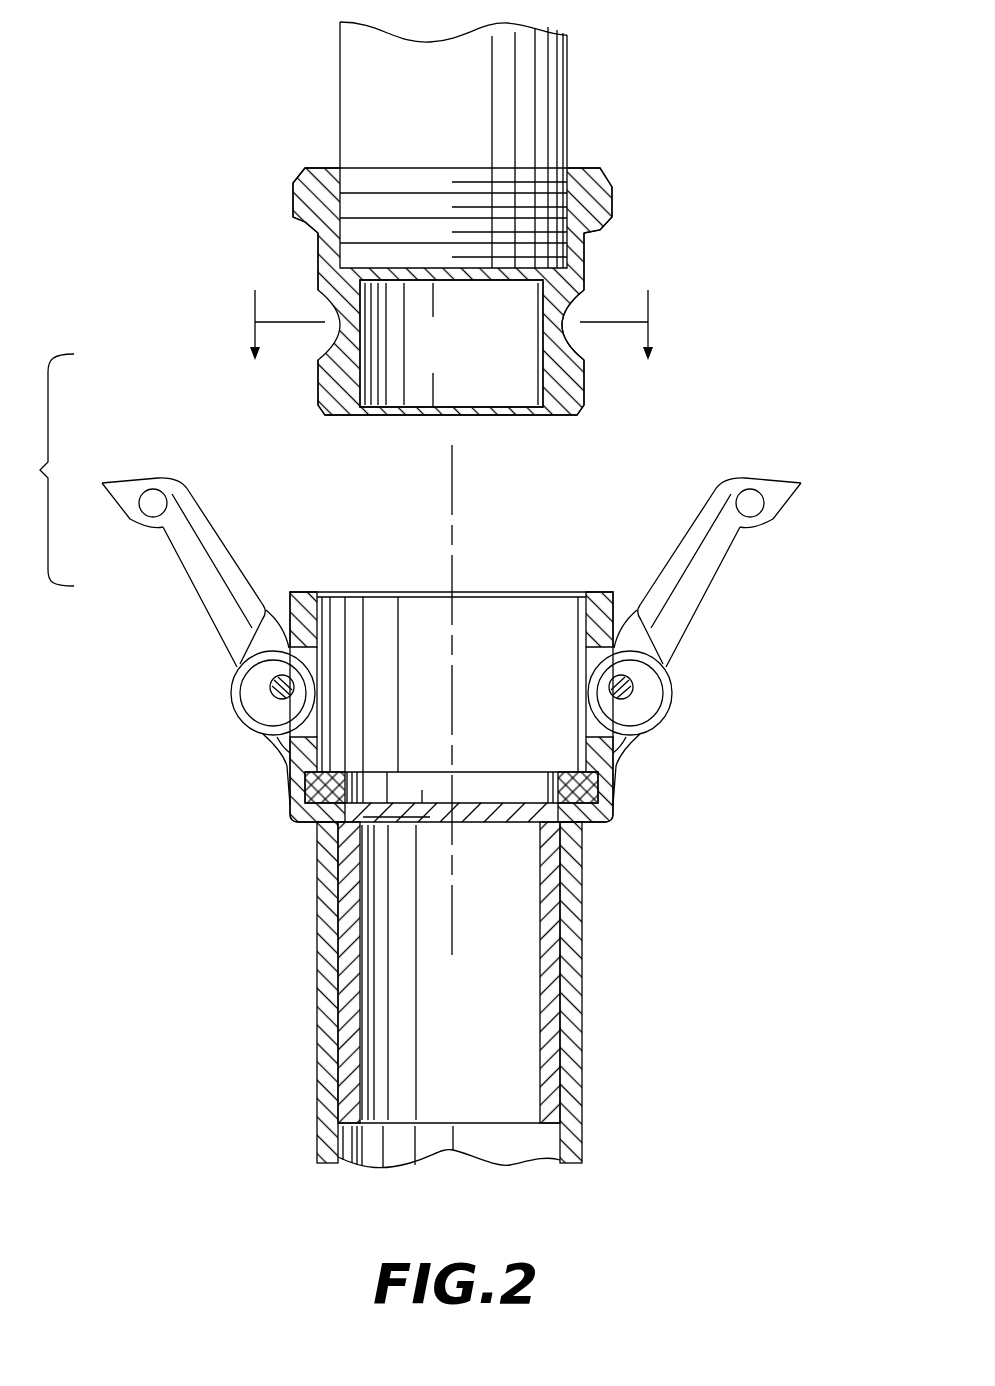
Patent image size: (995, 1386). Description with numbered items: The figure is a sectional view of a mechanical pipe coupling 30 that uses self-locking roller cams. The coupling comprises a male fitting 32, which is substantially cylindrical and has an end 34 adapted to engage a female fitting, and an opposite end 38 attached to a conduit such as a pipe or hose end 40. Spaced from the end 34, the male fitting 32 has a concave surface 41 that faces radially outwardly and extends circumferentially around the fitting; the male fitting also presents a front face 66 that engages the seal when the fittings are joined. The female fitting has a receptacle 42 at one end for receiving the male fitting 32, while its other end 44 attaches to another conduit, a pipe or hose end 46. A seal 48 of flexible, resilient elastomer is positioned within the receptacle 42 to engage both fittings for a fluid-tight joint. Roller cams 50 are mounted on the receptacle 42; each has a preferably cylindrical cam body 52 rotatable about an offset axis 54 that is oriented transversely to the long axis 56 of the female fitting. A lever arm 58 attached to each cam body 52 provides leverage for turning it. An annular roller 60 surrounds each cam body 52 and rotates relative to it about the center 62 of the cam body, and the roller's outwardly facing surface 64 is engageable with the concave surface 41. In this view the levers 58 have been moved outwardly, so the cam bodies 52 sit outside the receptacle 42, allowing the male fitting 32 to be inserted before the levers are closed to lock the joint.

The pipe coupling 30 is at (726, 210).
The male fitting 32 is at (574, 264).
The end 34 is at (325, 395).
The opposite end 38 is at (610, 181).
The pipe or hose end 40 is at (527, 105).
The concave surface 41 is at (590, 352).
The receptacle 42 is at (533, 647).
The other end 44 is at (545, 960).
The pipe or hose end 46 is at (547, 1138).
The seal 48 is at (290, 807).
The self-locking roller cam 50 is at (222, 680).
The cam body 52 is at (253, 703).
The offset axis 54 is at (263, 735).
The long axis 56 is at (447, 548).
The lever arm 58 is at (128, 478).
The annular roller 60 is at (240, 667).
The center 62 is at (268, 690).
The outwardly facing surface 64 is at (240, 723).
The front face 66 is at (565, 418).